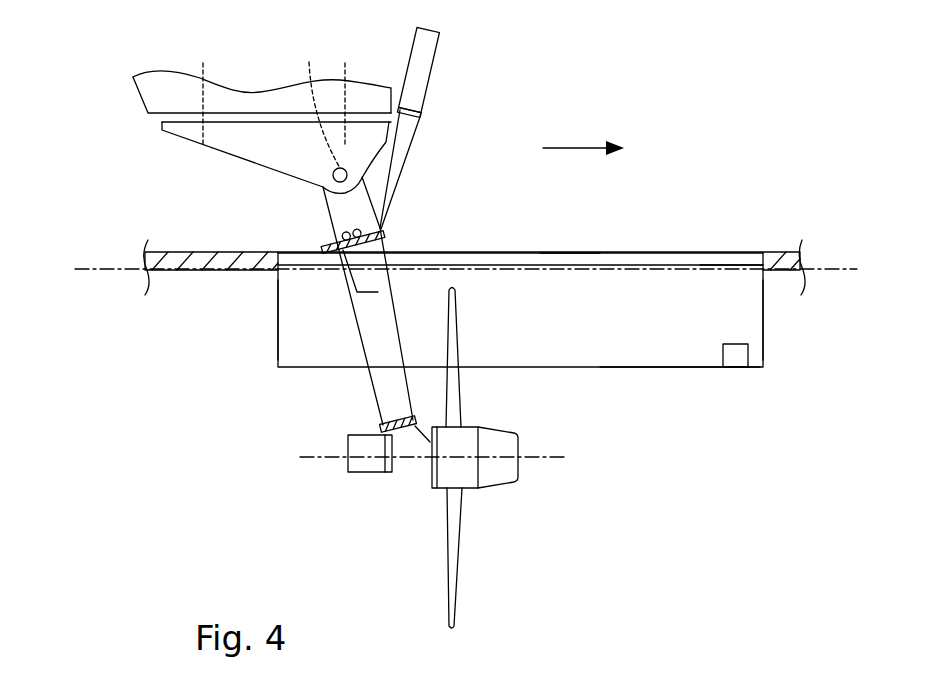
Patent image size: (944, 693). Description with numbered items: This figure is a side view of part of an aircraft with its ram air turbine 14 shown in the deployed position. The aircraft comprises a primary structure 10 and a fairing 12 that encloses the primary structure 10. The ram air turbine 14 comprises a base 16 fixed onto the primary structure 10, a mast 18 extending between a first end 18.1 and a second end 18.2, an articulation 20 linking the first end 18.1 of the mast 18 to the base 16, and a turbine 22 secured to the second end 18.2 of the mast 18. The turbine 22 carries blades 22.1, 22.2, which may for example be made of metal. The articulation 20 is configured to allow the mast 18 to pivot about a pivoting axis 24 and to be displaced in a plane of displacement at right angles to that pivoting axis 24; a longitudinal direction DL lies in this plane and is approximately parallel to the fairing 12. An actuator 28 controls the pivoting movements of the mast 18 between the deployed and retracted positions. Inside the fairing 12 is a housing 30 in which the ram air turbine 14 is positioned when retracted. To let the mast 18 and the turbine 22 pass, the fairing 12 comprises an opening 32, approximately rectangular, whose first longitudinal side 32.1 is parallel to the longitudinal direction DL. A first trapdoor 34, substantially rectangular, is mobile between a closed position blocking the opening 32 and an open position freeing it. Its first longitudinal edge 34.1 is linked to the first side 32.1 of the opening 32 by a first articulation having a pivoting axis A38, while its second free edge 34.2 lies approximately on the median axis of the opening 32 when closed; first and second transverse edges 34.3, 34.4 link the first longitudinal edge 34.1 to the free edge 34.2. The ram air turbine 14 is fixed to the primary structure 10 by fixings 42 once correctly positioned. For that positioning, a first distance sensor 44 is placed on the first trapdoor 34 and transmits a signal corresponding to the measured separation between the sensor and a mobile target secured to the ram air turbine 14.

The primary structure 10 is at (128, 84).
The fairing 12 is at (172, 282).
The ram air turbine 14 is at (330, 445).
The base 16 is at (233, 150).
The mast 18 is at (350, 332).
The first end 18.1 is at (328, 209).
The second end 18.2 is at (378, 431).
The articulation 20 is at (373, 165).
The turbine 22 is at (528, 490).
The blade 22.1 is at (456, 415).
The blade 22.2 is at (456, 556).
The pivoting axis 24 is at (320, 102).
The actuator 28 is at (448, 62).
The housing 30 is at (550, 235).
The opening 32 is at (631, 244).
The first longitudinal side 32.1 is at (678, 258).
The first trapdoor 34 is at (765, 331).
The first longitudinal edge 34.1 is at (568, 258).
The second free edge 34.2 is at (688, 370).
The first transverse edge 34.3 is at (278, 312).
The second transverse edge 34.4 is at (765, 305).
The fixings 42 is at (203, 63).
The first distance sensor 44 is at (745, 383).
The pivoting axis A38 is at (720, 266).
The longitudinal direction DL is at (570, 146).